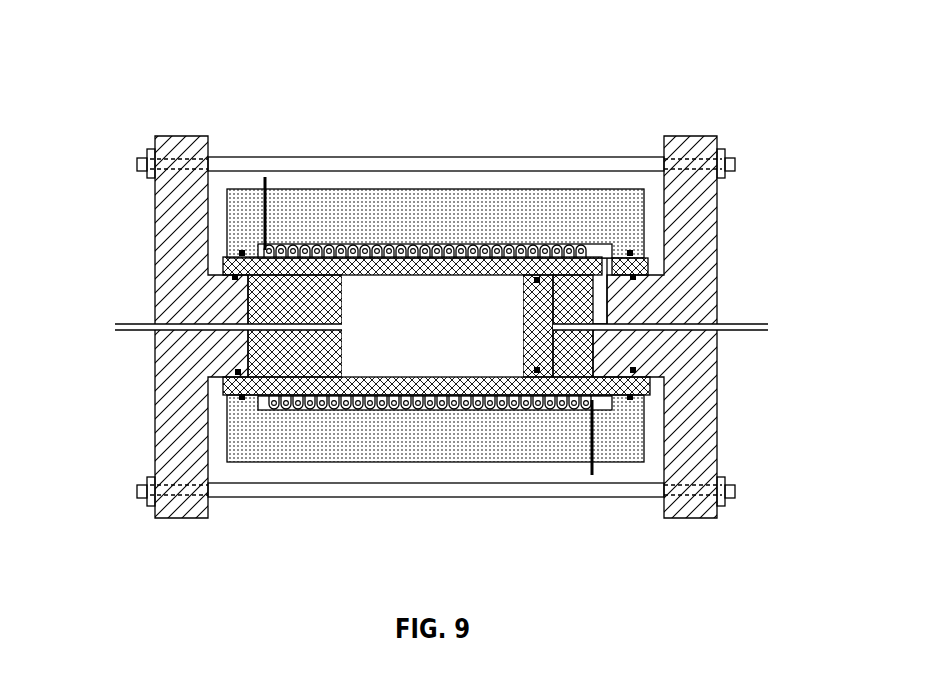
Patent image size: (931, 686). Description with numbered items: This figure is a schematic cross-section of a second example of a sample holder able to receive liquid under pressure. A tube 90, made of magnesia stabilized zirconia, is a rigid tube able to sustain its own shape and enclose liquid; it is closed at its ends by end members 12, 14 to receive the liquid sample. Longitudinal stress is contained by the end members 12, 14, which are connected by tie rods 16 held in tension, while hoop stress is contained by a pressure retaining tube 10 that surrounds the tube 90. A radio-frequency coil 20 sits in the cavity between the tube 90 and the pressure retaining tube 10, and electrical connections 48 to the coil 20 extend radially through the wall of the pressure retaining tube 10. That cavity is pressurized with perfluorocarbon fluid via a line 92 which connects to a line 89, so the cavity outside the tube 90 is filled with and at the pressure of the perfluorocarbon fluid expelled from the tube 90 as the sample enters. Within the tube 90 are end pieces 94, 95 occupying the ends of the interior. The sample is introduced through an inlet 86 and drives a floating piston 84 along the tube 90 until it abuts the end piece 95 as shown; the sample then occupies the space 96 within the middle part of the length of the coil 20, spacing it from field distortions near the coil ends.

The pressure retaining tube 10 is at (433, 520).
The end member 12 is at (172, 252).
The end member 14 is at (703, 440).
The tie rod 16 is at (286, 530).
The radio-frequency coil 20 is at (521, 242).
The electrical connections 48 is at (575, 520).
The floating piston 84 is at (527, 288).
The inlet 86 is at (196, 323).
The line 89 is at (768, 327).
The tube 90 is at (421, 272).
The line 92 is at (617, 310).
The end piece 94 is at (275, 352).
The end piece 95 is at (590, 352).
The space 96 is at (443, 366).